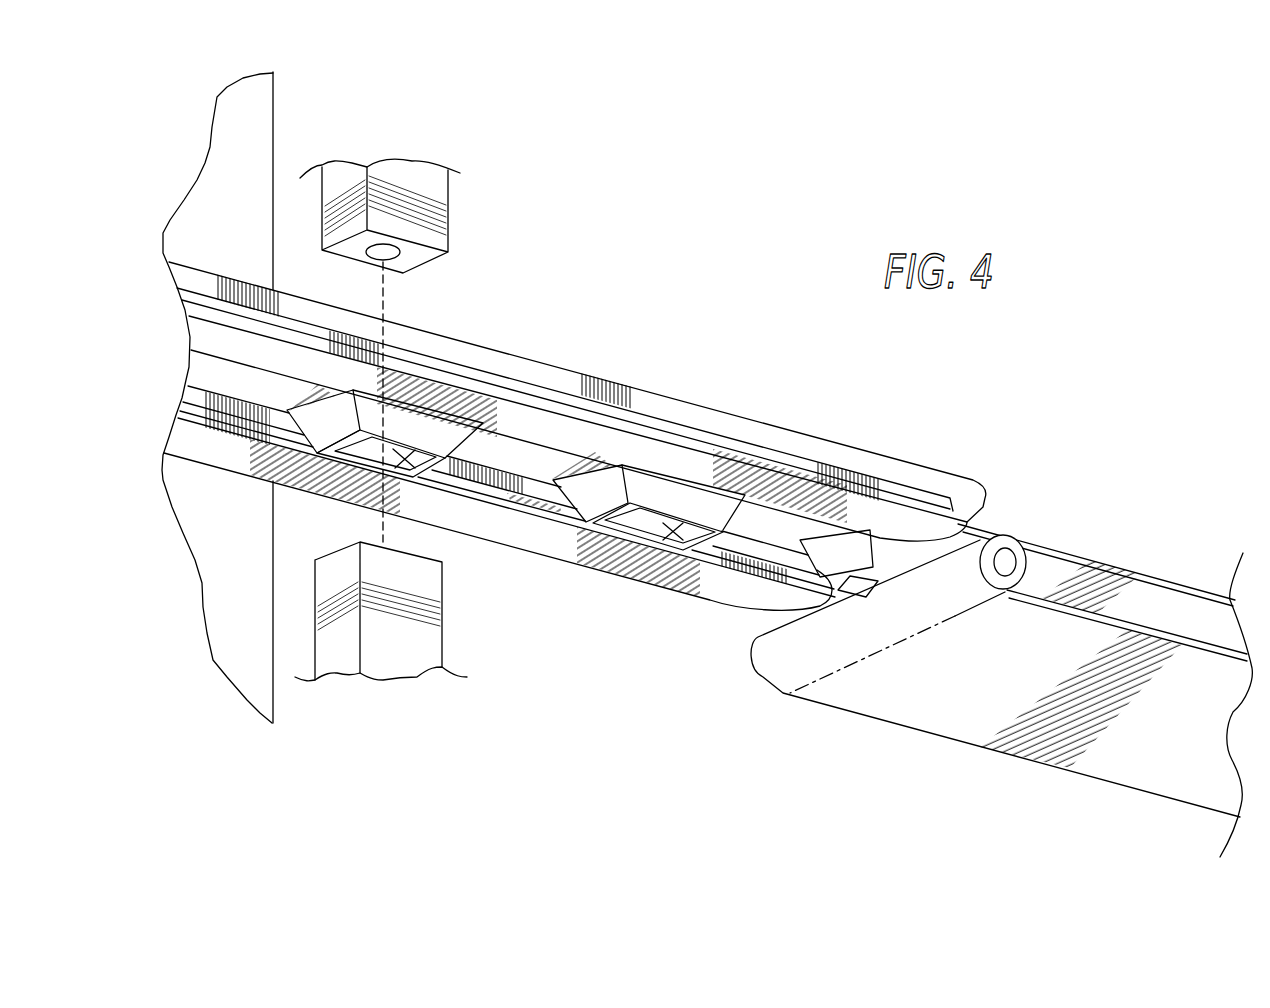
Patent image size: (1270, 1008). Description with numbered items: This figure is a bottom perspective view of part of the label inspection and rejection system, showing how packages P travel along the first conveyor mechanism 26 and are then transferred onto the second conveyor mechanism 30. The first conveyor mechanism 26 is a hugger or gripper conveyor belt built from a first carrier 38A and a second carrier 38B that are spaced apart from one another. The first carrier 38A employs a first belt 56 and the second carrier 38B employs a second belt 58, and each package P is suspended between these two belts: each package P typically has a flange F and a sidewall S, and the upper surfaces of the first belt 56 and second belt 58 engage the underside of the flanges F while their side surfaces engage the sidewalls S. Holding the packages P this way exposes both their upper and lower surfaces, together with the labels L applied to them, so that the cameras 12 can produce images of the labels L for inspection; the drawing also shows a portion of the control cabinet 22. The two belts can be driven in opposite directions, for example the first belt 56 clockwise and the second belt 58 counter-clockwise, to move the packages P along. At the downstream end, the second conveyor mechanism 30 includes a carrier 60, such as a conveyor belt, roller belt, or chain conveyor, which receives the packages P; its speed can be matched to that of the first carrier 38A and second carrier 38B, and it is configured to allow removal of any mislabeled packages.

The camera 12 is at (433, 197).
The control cabinet 22 is at (258, 137).
The first conveyor mechanism 26 is at (698, 394).
The second conveyor mechanism 30 is at (1107, 547).
The first carrier 38A is at (763, 487).
The second carrier 38B is at (562, 540).
The first belt 56 is at (873, 470).
The second belt 58 is at (540, 480).
The carrier 60 is at (1100, 750).
The flange F is at (297, 388).
The sidewall S is at (410, 430).
The package P is at (463, 433).
The label L is at (417, 463).